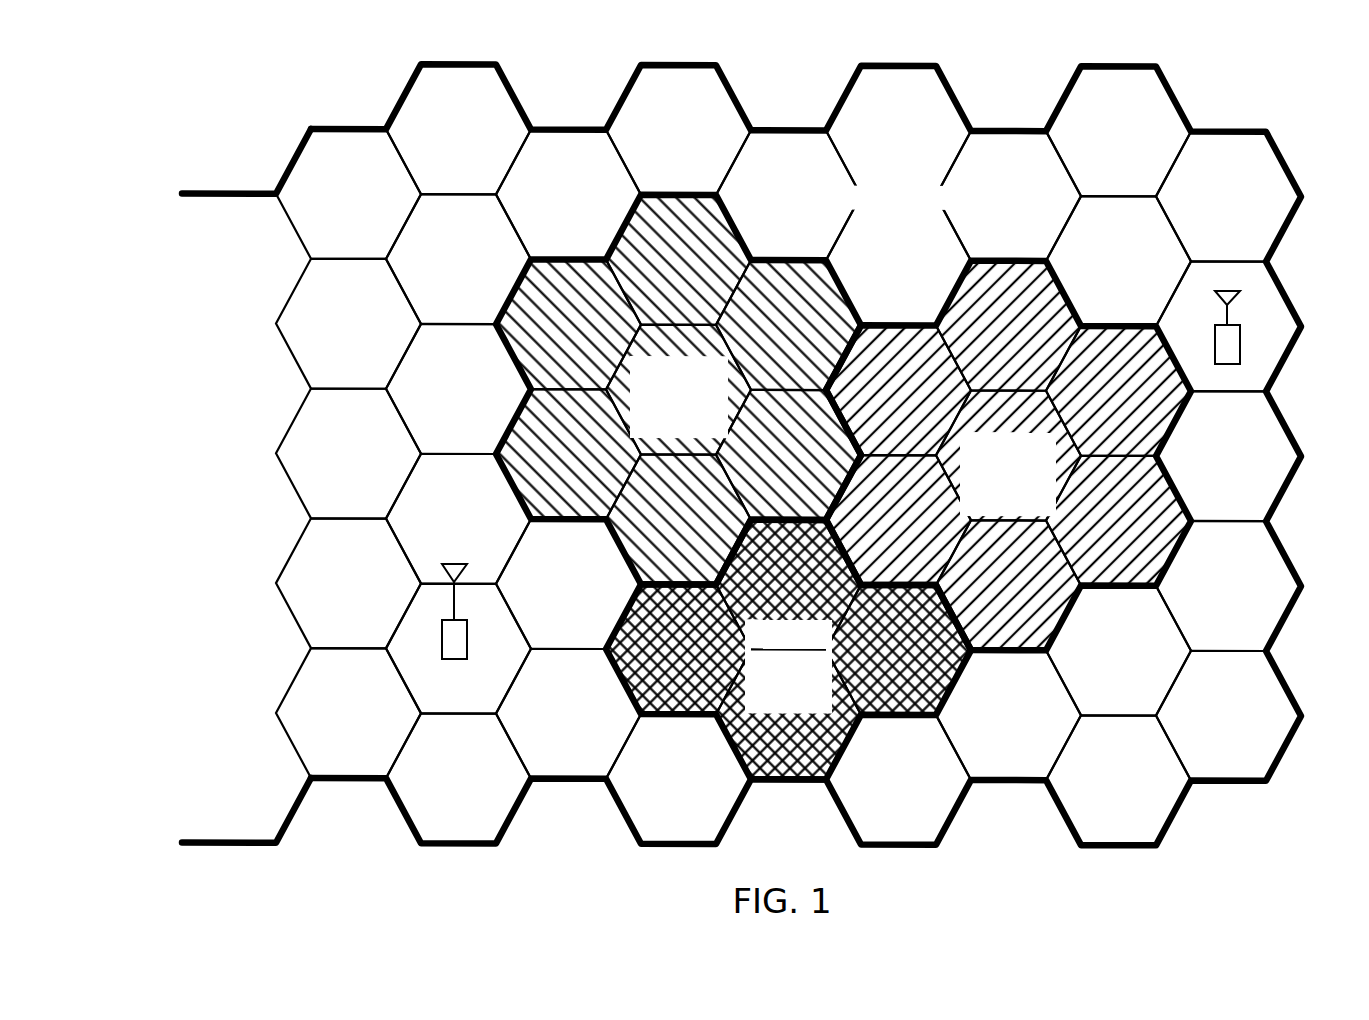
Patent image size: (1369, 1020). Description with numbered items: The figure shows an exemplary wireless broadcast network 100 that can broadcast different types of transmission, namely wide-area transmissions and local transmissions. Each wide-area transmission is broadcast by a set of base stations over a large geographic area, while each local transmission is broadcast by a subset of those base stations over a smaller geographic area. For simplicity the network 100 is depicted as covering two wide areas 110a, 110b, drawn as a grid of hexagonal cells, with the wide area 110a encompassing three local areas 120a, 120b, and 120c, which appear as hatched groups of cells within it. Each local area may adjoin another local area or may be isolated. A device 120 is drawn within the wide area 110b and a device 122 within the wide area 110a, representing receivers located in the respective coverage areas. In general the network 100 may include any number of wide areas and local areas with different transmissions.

The wireless broadcast network 100 is at (134, 89).
The wide area 110a is at (564, 127).
The wide area 110b is at (236, 191).
The local area 120a is at (656, 432).
The local area 120b is at (985, 510).
The local area 120c is at (766, 709).
The wireless device in wide area 2 120 is at (441, 659).
The wireless device in wide area 1 122 is at (1240, 348).